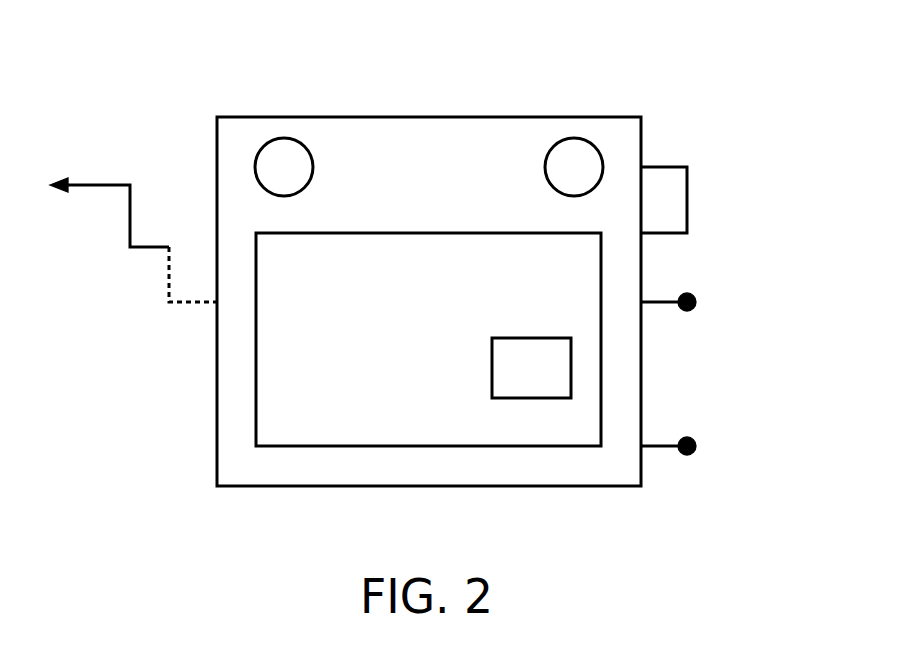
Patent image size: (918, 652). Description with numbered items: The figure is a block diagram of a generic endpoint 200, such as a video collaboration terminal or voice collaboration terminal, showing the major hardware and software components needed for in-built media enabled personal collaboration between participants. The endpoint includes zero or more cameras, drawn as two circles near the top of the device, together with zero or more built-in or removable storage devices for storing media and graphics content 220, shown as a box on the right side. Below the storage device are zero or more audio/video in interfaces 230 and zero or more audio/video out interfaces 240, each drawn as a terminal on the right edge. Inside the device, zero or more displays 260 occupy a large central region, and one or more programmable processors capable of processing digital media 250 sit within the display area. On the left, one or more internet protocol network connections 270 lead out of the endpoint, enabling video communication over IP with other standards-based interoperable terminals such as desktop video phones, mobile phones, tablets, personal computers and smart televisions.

The electronic device 200 is at (163, 72).
The storage device 220 is at (688, 199).
The audio/video in interface 230 is at (696, 302).
The audio/video out interface 240 is at (696, 446).
The programmable processor 250 is at (492, 366).
The display 260 is at (256, 383).
The internet protocol (IP) network connection 270 is at (90, 188).